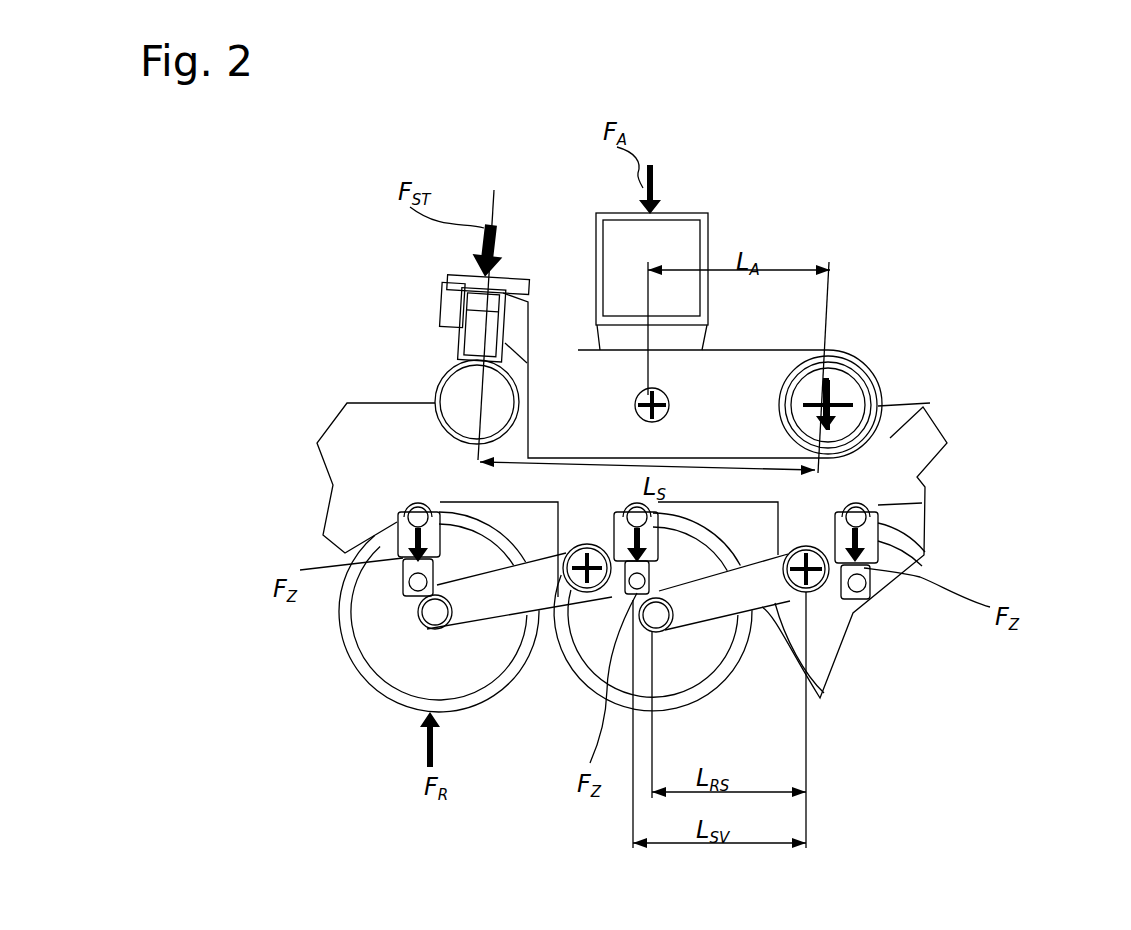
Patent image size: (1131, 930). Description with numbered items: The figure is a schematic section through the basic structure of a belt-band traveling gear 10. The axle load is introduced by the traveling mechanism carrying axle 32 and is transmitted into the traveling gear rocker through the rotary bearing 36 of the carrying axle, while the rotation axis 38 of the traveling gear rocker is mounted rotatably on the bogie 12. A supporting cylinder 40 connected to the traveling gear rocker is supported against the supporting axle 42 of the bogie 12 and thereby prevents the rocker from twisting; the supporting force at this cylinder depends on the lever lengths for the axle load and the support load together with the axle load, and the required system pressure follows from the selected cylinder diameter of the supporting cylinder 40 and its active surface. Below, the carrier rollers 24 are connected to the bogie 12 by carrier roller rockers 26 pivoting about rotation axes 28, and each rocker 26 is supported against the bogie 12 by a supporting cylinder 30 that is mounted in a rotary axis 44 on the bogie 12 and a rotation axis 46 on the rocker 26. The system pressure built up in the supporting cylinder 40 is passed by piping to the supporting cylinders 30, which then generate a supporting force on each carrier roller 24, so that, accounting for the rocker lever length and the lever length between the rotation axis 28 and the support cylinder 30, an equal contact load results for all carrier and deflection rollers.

The belt-band traveling gear 10 is at (1019, 224).
The bogie 12 is at (930, 403).
The carrier roller 24 is at (383, 660).
The carrier roller rocker 26 is at (528, 600).
The rotation axis of the rocker 28 is at (565, 588).
The supporting cylinder for the carrier roller 30 is at (616, 513).
The traveling mechanism carrying axle 32 is at (703, 220).
The rotary bearing of the carrying axle 36 is at (637, 393).
The rotation axis of the traveling gear rocker 38 is at (822, 410).
The supporting cylinder 40 is at (470, 274).
The supporting axle 42 is at (445, 392).
The rotary axis 44 is at (397, 523).
The rotation axis 46 is at (415, 590).